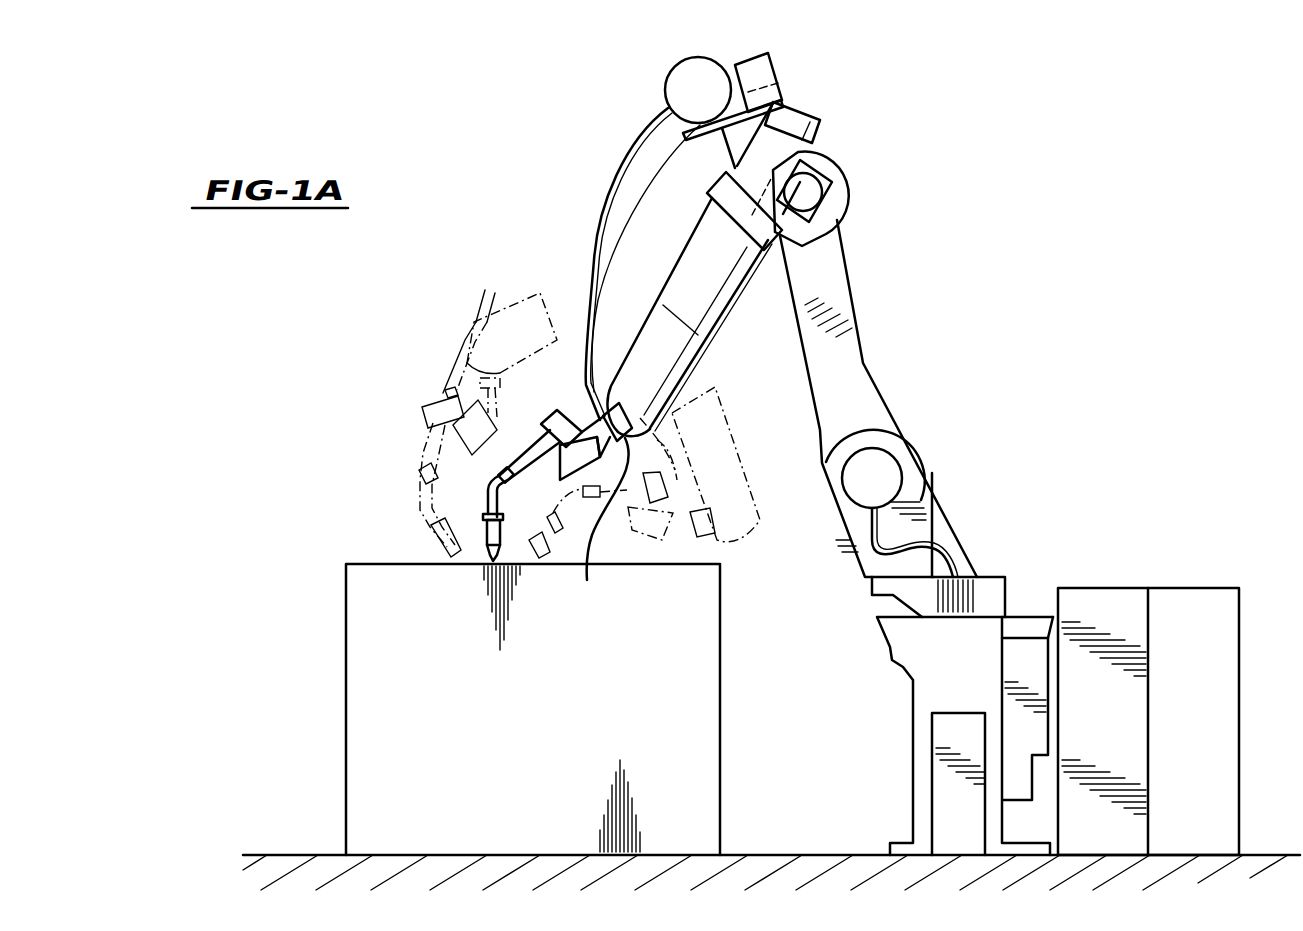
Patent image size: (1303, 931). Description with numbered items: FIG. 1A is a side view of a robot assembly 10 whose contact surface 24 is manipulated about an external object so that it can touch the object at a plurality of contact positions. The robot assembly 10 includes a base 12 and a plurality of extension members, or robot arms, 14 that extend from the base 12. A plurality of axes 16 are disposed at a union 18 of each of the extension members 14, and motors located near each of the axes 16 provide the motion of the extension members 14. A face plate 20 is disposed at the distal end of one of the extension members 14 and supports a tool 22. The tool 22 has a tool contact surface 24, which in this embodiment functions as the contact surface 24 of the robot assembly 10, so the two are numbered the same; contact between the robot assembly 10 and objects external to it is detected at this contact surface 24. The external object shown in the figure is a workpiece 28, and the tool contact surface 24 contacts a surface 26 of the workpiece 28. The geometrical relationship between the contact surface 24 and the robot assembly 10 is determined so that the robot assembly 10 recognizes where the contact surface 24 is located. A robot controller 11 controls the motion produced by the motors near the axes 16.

The robot assembly 10 is at (1125, 305).
The robot controller 11 is at (1201, 716).
The base 12 is at (922, 680).
The extension members 14 is at (655, 391).
The axes 16 is at (840, 158).
The union 18 is at (805, 200).
The face plate 20 is at (632, 358).
The tool 22 is at (480, 526).
The contact surface 24 is at (482, 560).
The surface 26 is at (630, 563).
The workpiece 28 is at (330, 713).